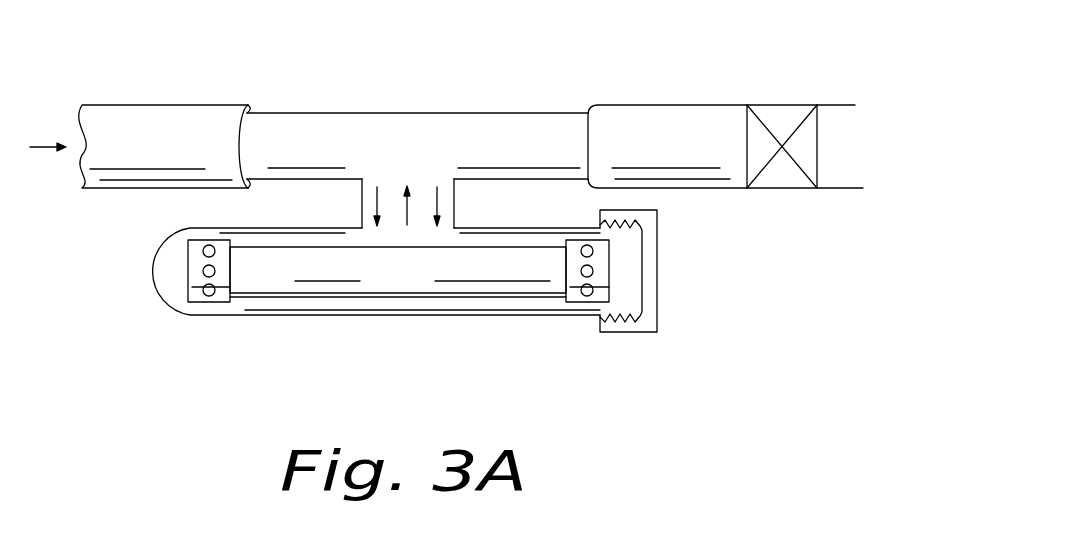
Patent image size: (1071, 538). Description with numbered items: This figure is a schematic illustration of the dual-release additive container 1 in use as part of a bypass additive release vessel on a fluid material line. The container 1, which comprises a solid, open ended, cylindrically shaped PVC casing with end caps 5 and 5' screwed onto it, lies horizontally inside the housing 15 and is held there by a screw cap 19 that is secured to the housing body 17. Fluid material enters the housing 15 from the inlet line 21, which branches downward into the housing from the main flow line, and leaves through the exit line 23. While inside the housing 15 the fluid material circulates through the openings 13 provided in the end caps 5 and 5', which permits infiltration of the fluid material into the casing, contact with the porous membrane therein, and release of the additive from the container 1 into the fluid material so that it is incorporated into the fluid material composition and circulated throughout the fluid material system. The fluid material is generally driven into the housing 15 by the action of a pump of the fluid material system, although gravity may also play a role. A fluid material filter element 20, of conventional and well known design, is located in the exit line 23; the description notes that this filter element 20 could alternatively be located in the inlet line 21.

The container 1 is at (407, 268).
The end cap 5 is at (659, 293).
The end cap 5' is at (144, 265).
The openings 13 is at (222, 300).
The housing 15 is at (135, 322).
The housing body 17 is at (192, 314).
The screw cap 19 is at (648, 247).
The fluid material filter element 20 is at (780, 175).
The inlet line 21 is at (178, 120).
The exit line 23 is at (698, 118).